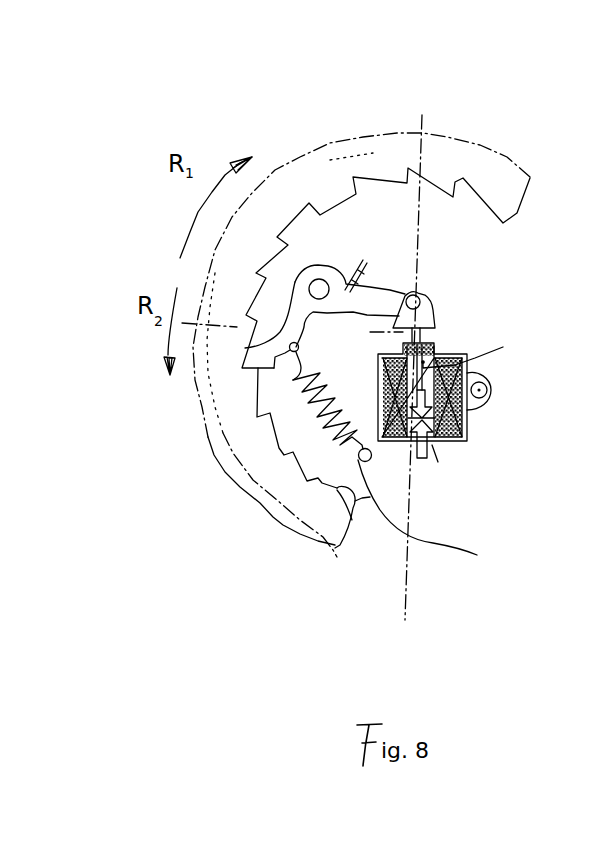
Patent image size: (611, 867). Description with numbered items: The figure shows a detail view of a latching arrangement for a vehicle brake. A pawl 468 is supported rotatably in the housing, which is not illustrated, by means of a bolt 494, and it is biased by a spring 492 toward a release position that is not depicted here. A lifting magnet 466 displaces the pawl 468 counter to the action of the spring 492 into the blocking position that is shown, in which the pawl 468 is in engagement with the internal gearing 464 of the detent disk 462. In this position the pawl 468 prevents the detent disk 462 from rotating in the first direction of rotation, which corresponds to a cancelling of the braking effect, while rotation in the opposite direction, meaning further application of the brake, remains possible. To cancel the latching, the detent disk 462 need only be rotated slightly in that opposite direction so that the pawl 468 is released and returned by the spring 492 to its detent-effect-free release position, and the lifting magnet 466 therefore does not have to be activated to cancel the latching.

The detent disk 462 is at (485, 168).
The internal gearing 464 is at (335, 548).
The lifting magnet 466 is at (470, 428).
The pawl 468 is at (363, 260).
The spring 492 is at (460, 557).
The bolt 494 is at (319, 289).